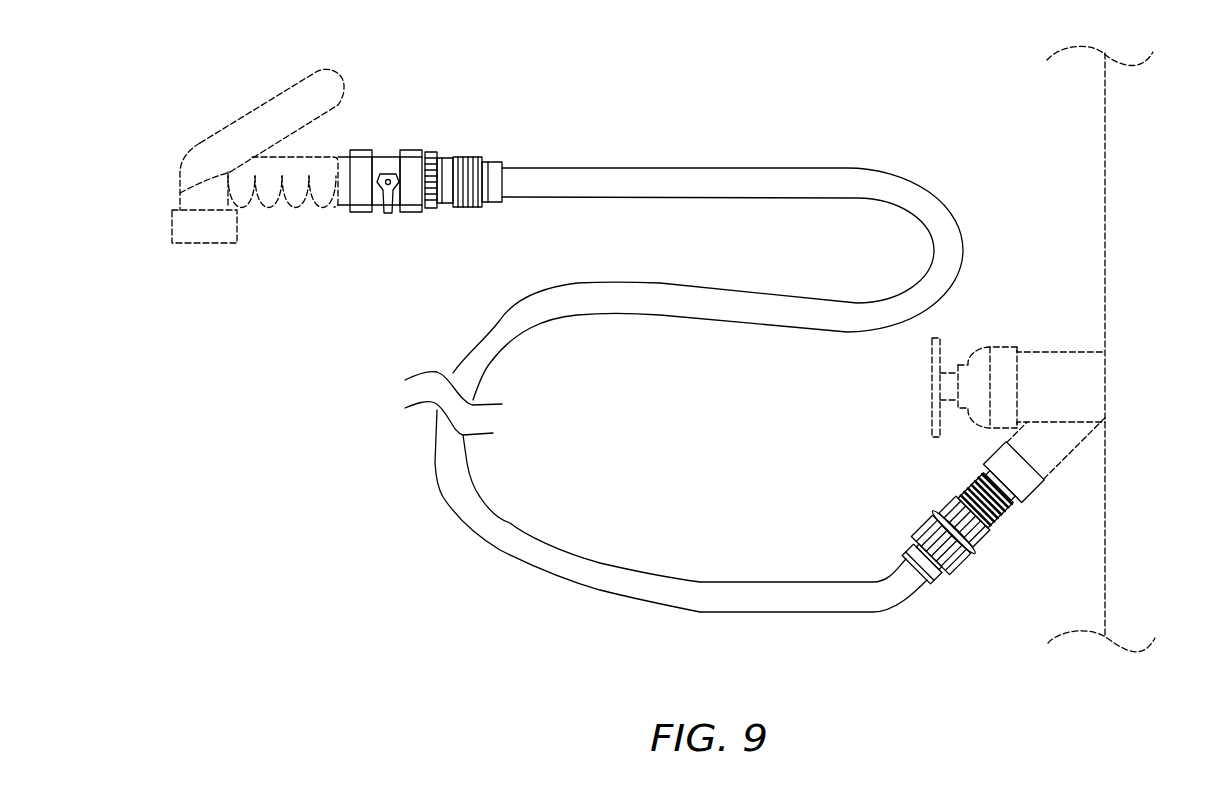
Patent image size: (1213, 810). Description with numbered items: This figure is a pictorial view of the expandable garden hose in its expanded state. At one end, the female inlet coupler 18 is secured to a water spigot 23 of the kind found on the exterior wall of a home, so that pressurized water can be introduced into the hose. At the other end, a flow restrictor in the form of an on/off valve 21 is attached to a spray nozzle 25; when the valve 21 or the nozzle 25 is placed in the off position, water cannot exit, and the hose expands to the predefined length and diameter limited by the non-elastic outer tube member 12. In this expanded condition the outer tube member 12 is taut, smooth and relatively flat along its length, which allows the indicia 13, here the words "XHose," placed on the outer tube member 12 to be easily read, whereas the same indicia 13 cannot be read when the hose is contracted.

The outer tube member 12 is at (542, 165).
The indicia 13 is at (715, 173).
The female inlet coupler 18 is at (923, 512).
The on/off valve (flow restrictor) 21 is at (388, 157).
The water spigot 23 is at (1093, 388).
The spray nozzle 25 is at (245, 125).